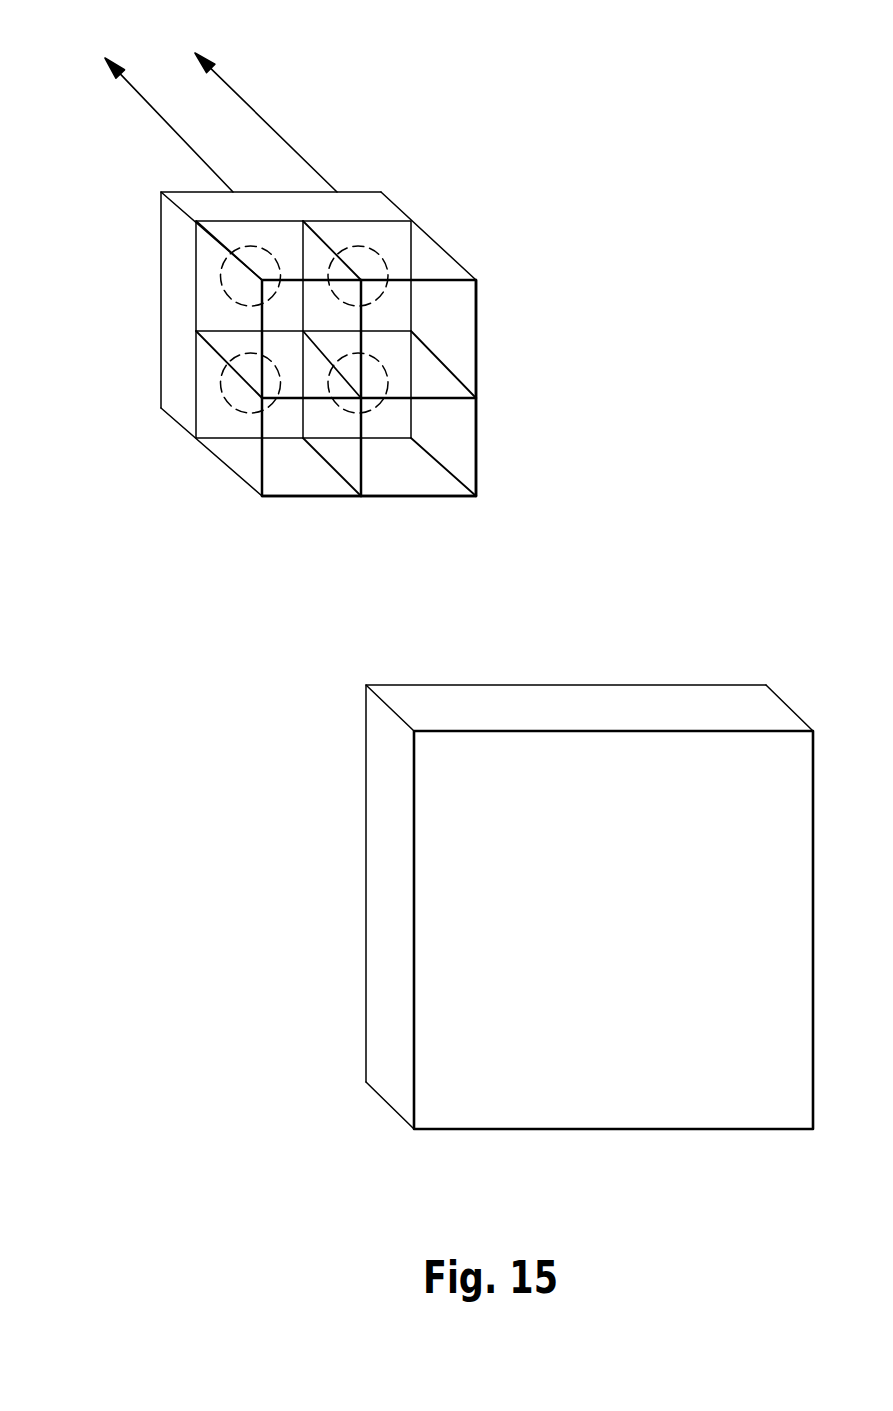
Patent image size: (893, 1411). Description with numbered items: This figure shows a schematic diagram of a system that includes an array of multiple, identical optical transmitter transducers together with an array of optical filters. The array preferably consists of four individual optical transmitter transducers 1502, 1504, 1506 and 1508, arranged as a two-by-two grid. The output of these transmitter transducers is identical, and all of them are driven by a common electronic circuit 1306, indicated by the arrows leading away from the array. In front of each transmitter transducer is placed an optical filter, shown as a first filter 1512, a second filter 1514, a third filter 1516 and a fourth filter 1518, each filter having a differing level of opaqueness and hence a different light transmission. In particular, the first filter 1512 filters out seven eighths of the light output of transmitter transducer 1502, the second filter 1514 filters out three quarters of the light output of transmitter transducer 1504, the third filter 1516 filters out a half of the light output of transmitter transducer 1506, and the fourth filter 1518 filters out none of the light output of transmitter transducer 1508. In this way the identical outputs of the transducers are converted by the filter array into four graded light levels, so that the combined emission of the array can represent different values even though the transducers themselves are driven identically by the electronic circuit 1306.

The electronic circuit 1306 is at (221, 98).
The optical transmitter transducer 1502 is at (263, 320).
The optical transmitter transducer 1504 is at (303, 498).
The optical transmitter transducer 1506 is at (477, 322).
The optical transmitter transducer 1508 is at (422, 498).
The first filter 1512 is at (228, 233).
The second filter 1514 is at (208, 410).
The third filter 1516 is at (382, 230).
The fourth filter 1518 is at (398, 422).